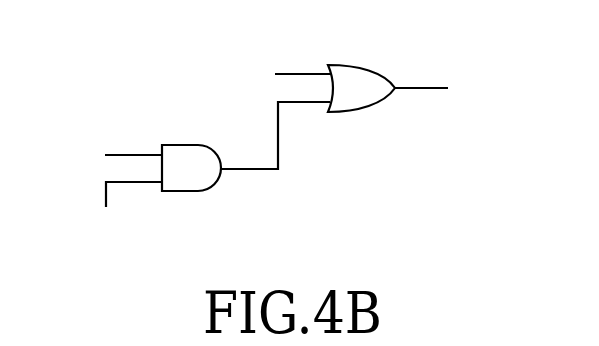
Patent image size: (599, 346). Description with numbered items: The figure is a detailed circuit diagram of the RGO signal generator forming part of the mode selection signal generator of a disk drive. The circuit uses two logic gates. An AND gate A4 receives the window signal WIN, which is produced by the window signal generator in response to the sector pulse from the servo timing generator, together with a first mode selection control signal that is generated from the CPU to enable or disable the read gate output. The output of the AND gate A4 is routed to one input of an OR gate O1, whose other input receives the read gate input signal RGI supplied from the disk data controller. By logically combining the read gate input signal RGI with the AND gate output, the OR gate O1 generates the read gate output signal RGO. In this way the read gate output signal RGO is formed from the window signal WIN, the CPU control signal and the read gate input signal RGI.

The AND gate A4 is at (184, 146).
The OR gate O1 is at (350, 65).
The window signal WIN is at (110, 157).
The read gate input signal RGI is at (282, 76).
The read gate output signal RGO is at (450, 88).